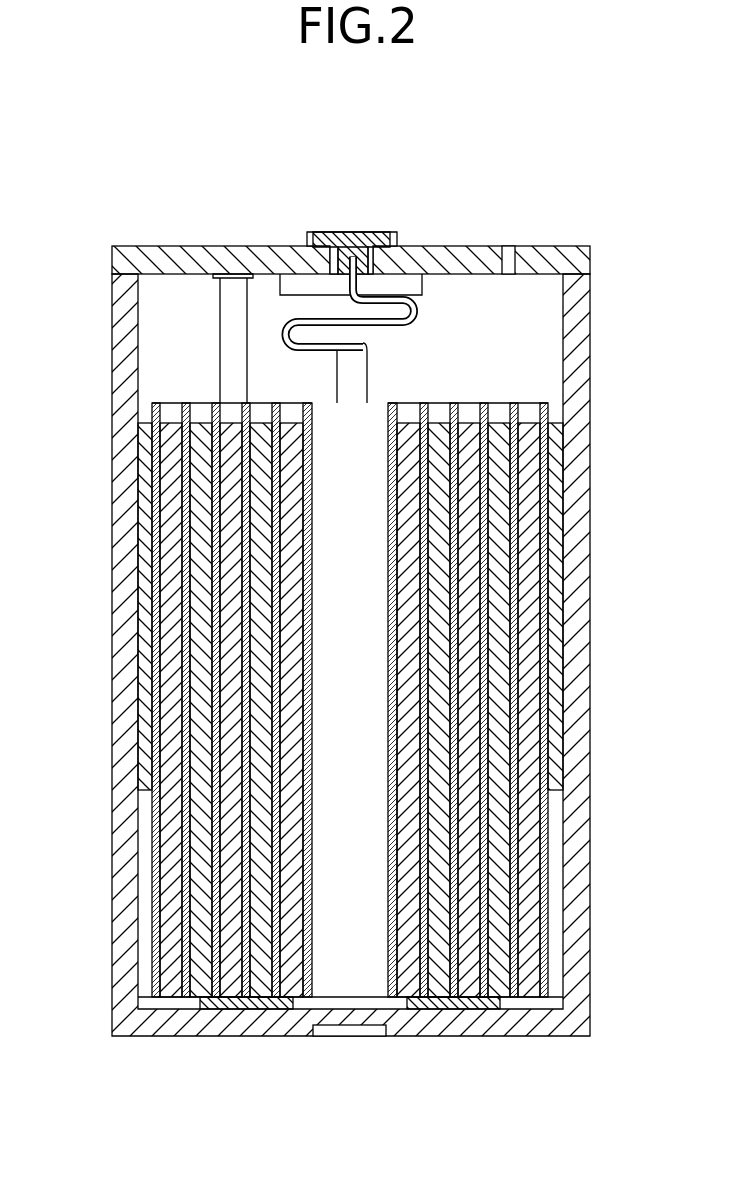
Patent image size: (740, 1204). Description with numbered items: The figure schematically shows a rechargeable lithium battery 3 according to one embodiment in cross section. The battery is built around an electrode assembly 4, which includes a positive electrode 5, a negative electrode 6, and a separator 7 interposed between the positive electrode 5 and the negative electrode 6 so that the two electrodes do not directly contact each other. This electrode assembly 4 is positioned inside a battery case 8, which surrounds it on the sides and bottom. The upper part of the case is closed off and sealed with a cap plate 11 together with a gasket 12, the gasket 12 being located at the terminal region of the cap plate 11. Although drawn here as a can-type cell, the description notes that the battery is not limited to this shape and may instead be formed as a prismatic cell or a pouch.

The rechargeable lithium battery 3 is at (342, 135).
The electrode assembly 4 is at (477, 386).
The positive electrode 5 is at (530, 838).
The negative electrode 6 is at (200, 898).
The separator 7 is at (185, 961).
The battery case 8 is at (127, 358).
The cap plate 11 is at (445, 252).
The gasket 12 is at (310, 232).